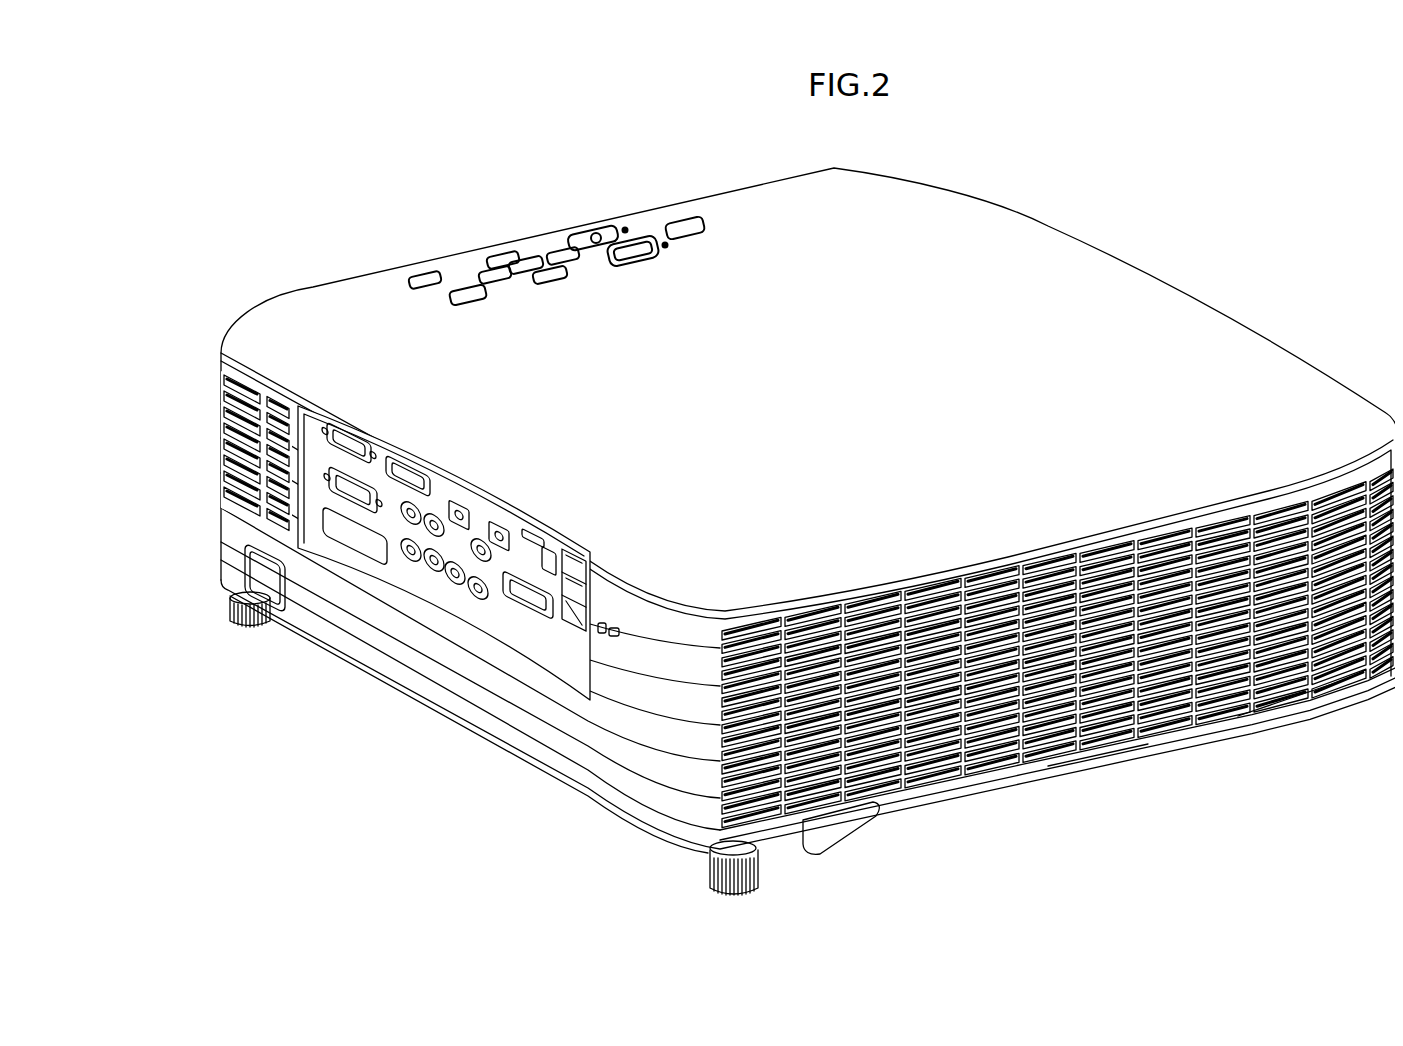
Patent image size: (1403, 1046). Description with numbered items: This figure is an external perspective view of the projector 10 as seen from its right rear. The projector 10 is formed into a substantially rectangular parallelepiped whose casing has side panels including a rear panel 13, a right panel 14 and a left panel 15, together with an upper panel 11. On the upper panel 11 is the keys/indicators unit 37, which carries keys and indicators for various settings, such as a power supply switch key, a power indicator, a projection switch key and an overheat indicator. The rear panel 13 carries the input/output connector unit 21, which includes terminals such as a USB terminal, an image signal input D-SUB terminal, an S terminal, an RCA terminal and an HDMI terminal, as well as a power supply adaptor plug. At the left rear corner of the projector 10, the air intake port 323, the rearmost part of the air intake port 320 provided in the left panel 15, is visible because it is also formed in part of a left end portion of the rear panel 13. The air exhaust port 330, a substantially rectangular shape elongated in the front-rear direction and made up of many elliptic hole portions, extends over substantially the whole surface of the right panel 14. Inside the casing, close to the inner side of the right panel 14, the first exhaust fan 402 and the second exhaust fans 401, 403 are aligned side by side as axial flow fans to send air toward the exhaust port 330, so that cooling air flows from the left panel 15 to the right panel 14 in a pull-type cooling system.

The projector 10 is at (1155, 190).
The upper panel 11 is at (740, 218).
The rear panel 13 is at (510, 692).
The right panel 14 is at (1050, 756).
The left panel 15 is at (303, 284).
The input/output connector unit 21 is at (433, 587).
The keys/indicators unit 37 is at (633, 218).
The air intake port 320 is at (202, 457).
The air intake port (second air intake port) 323 is at (212, 440).
The air exhaust port 330 is at (1183, 717).
The second exhaust fan 401 is at (1277, 697).
The first exhaust fan 402 is at (1090, 743).
The second exhaust fan 403 is at (850, 790).